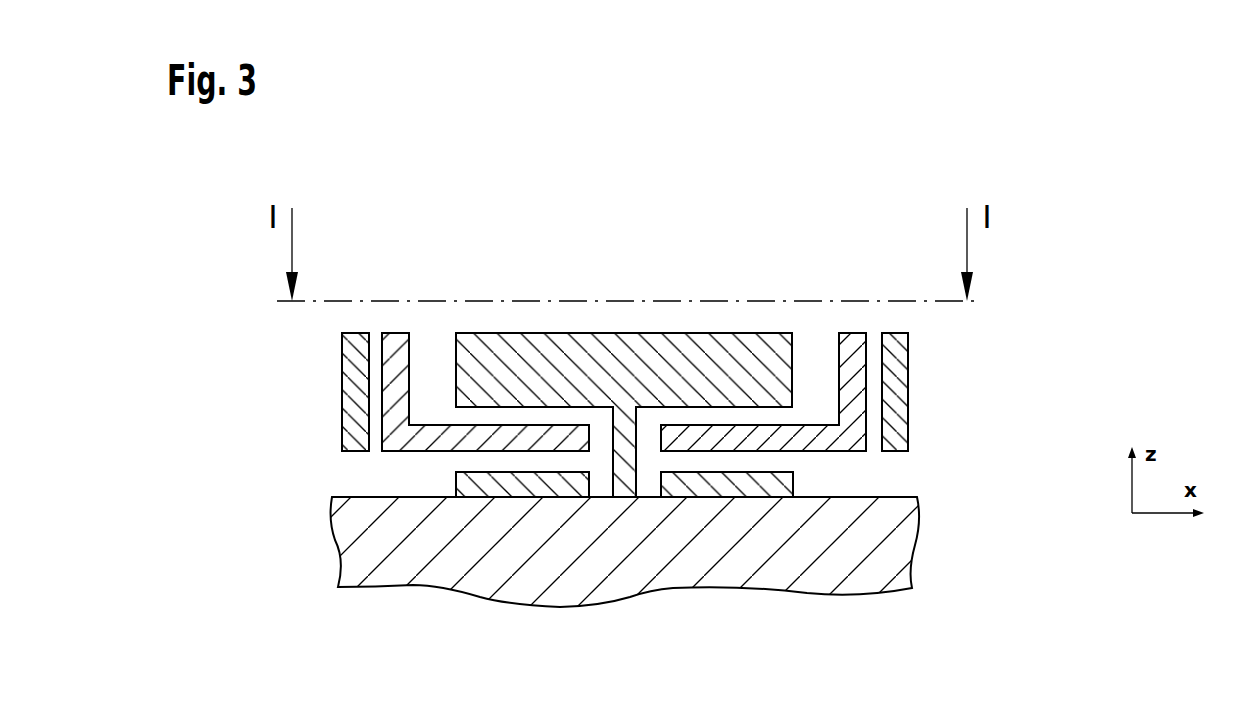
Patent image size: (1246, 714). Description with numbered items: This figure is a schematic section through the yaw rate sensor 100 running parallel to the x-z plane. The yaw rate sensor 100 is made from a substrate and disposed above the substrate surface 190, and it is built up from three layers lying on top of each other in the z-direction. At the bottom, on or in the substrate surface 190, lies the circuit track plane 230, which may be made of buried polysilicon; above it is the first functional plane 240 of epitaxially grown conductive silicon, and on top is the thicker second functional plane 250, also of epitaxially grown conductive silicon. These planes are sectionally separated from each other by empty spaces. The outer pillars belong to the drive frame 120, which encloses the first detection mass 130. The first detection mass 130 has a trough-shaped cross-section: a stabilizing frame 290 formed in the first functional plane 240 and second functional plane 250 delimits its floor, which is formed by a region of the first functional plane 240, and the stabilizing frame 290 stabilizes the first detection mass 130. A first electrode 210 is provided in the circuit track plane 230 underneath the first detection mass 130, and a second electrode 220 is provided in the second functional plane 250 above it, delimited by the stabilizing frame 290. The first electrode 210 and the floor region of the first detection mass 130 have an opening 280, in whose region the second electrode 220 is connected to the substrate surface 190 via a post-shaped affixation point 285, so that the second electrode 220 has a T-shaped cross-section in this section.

The yaw rate sensor 100 is at (341, 208).
The drive frame 120 is at (349, 333).
The first detection mass 130 is at (426, 437).
The substrate surface 190 is at (369, 485).
The first electrode 210 is at (522, 490).
The second electrode 220 is at (618, 333).
The circuit track plane 230 is at (956, 472).
The first functional plane 240 is at (956, 425).
The second functional plane 250 is at (956, 335).
The opening 280 is at (651, 453).
The affixation point 285 is at (633, 490).
The stabilizing frame 290 is at (402, 333).